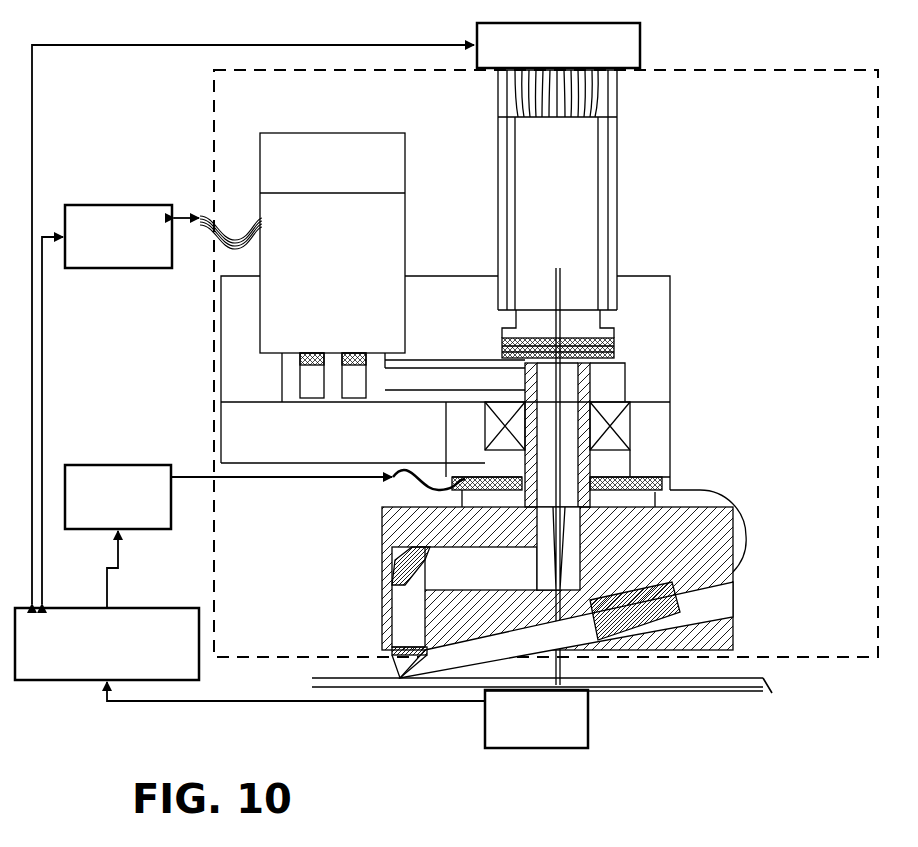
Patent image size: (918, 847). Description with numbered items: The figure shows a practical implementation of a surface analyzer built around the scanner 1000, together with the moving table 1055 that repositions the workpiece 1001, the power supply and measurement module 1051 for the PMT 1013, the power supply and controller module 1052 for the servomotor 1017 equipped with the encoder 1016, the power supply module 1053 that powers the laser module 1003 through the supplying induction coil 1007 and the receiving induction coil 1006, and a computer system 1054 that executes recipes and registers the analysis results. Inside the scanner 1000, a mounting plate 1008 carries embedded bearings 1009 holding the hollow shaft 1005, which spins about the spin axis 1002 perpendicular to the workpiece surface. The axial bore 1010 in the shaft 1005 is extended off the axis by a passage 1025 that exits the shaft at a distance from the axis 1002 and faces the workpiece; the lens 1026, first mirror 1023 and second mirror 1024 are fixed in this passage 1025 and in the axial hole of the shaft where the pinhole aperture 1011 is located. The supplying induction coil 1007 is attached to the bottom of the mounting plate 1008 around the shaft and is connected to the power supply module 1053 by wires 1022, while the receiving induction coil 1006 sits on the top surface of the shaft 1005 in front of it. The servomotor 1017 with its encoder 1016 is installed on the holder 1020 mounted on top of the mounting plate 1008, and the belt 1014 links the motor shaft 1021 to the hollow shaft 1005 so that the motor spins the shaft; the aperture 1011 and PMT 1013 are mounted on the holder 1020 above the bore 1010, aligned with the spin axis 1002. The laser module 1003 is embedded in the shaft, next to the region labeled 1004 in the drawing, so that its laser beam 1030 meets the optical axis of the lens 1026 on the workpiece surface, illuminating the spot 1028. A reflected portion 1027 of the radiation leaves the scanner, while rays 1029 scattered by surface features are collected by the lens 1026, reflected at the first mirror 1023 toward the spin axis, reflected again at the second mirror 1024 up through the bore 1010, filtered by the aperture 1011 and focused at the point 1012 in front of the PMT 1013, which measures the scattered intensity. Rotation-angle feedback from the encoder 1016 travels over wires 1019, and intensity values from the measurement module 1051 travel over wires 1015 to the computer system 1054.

The scanner 1000 is at (546, 363).
The workpiece 1001 is at (764, 689).
The spin axis 1002 is at (562, 668).
The laser module 1003 is at (684, 618).
The blade slot 1004 is at (714, 605).
The hollow shaft 1005 is at (760, 535).
The receiving induction coil 1006 is at (658, 490).
The supplying induction coil 1007 is at (676, 422).
The mounting plate 1008 is at (248, 426).
The bearings 1009 is at (594, 400).
The axial bore 1010 is at (570, 392).
The pinhole aperture 1011 is at (618, 348).
The focus point 1012 is at (560, 338).
The PMT 1013 is at (574, 185).
The belt 1014 is at (439, 378).
The wires 1015 is at (520, 90).
The encoder 1016 is at (262, 158).
The servomotor 1017 is at (262, 198).
The wires 1019 is at (225, 248).
The holder 1020 is at (238, 318).
The motor shaft 1021 is at (298, 382).
The wires 1022 is at (440, 486).
The first mirror 1023 is at (378, 558).
The second mirror 1024 is at (528, 562).
The passage 1025 is at (395, 615).
The lens 1026 is at (380, 668).
The reflected portion of laser radiation 1027 is at (314, 681).
The spot 1028 is at (397, 680).
The rays of scattered radiation 1029 is at (420, 686).
The laser beam 1030 is at (578, 680).
The power supply and measurement module 1051 is at (558, 45).
The power supply and controller module 1052 is at (118, 236).
The power supply module 1053 is at (118, 497).
The computer system 1054 is at (107, 644).
The moving table 1055 is at (536, 719).